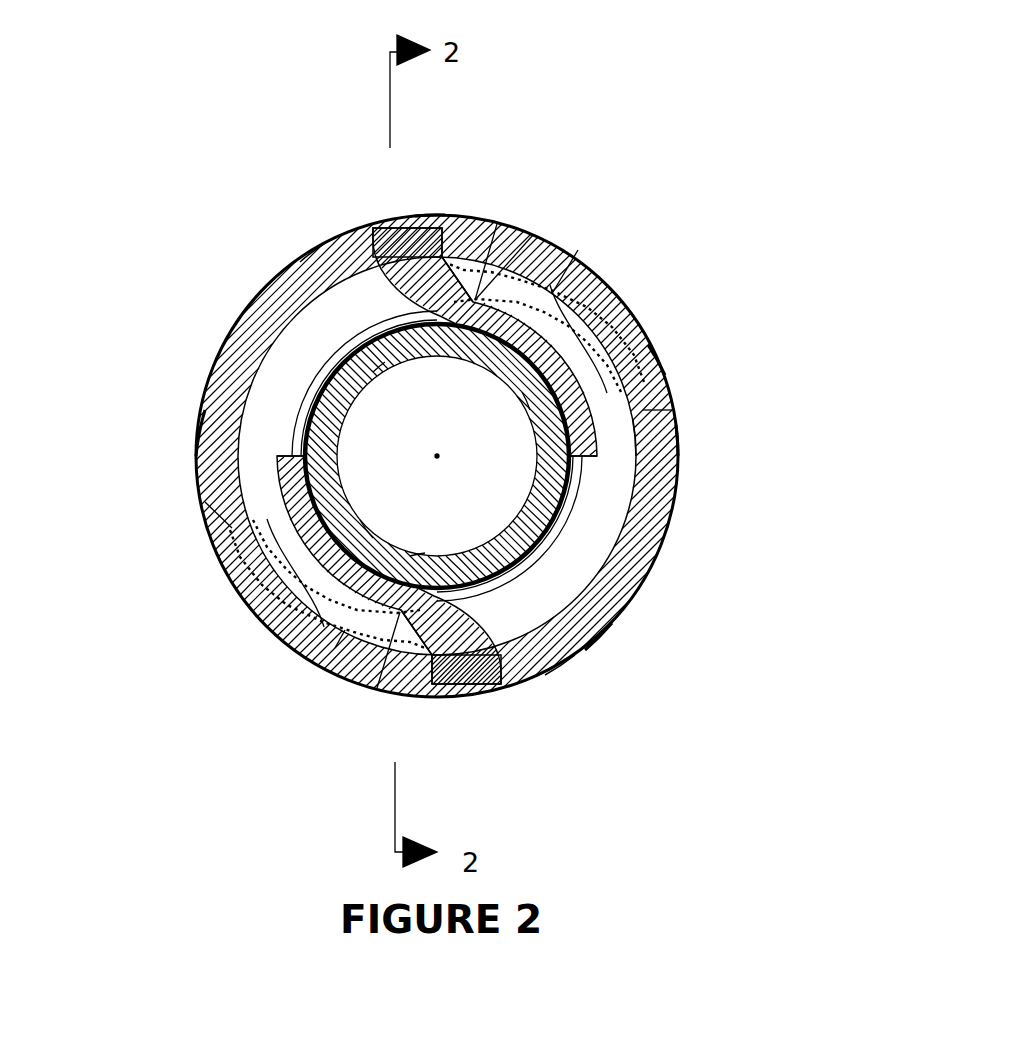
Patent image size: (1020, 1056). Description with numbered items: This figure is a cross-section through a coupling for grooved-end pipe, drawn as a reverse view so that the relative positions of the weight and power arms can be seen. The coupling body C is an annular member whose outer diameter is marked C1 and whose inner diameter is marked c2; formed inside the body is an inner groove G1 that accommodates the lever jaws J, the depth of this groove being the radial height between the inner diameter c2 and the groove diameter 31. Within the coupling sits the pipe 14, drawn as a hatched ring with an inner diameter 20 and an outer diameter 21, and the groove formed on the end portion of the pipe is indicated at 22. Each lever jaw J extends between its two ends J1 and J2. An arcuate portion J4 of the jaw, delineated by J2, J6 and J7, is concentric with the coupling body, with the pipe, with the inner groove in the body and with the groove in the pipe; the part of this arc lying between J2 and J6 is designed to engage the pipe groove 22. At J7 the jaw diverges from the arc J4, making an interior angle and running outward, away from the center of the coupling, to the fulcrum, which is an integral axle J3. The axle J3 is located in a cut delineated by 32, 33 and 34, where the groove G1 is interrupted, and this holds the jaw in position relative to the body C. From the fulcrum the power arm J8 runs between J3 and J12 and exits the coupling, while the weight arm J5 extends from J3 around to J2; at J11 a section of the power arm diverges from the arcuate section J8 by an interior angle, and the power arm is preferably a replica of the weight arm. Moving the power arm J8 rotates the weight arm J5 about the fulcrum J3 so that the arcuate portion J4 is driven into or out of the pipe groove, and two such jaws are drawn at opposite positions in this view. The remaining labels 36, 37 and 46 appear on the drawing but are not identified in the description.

The pipe 14 is at (511, 533).
The inner diameter of pipe 20 is at (338, 437).
The outer diameter of pipe 21 is at (365, 330).
The pipe groove 22 is at (538, 455).
The inner diameter of coupling body c2 is at (537, 470).
The groove diameter 31 is at (250, 372).
The cut boundary 32 is at (308, 260).
The cut boundary 33 is at (497, 224).
The cut boundary 34 is at (430, 218).
The outer surface 36 is at (672, 440).
The inner surface 37 is at (662, 438).
The ring portion 46 is at (612, 623).
The coupling body C is at (218, 425).
The outer diameter of coupling body C1 is at (223, 350).
The inner groove G1 is at (648, 345).
The lever jaw J is at (400, 292).
The lever end J1 is at (378, 222).
The lever end J2 is at (280, 455).
The fulcrum integral axle J3 is at (442, 222).
The arcuate portion J4 is at (522, 392).
The weight arm J5 is at (245, 487).
The arcuate portion boundary point J6 is at (373, 372).
The divergence point J7 is at (578, 250).
The power arm J8 is at (605, 290).
The power arm divergence point J11 is at (533, 235).
The power arm end J12 is at (643, 410).